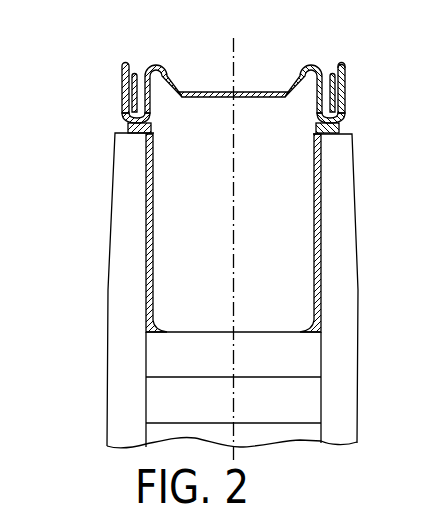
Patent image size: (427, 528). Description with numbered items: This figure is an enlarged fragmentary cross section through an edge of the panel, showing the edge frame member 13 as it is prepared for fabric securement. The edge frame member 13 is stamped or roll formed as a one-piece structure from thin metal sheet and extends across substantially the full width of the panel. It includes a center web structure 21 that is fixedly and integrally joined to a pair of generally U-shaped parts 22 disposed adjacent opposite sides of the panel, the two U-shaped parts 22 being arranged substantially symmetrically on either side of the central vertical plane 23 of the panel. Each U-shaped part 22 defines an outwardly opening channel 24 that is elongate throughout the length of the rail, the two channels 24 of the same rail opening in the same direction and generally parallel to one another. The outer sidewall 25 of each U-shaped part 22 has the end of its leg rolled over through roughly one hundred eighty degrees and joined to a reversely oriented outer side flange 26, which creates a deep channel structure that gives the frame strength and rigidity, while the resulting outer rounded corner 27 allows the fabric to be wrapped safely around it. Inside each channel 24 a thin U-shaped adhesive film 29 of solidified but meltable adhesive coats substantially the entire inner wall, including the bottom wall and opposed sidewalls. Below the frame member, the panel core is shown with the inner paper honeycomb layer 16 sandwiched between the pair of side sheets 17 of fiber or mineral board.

The edge frame member 13 is at (316, 215).
The paper honeycomb layer 16 is at (307, 398).
The side sheet 17 is at (124, 268).
The center web structure 21 is at (218, 91).
The U-shaped part 22 is at (146, 75).
The central vertical plane 23 is at (236, 62).
The channel 24 is at (127, 64).
The outer sidewall 25 is at (336, 88).
The outer side flange 26 is at (346, 98).
The outer rounded corner 27 is at (346, 69).
The adhesive film 29 is at (131, 100).